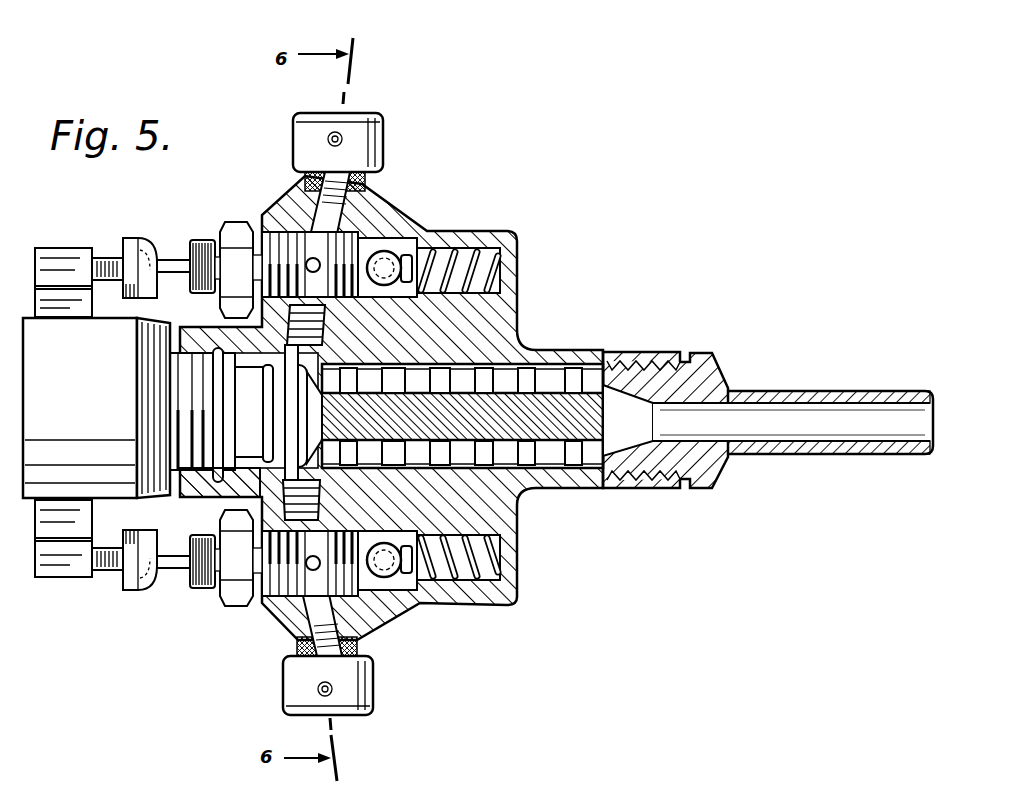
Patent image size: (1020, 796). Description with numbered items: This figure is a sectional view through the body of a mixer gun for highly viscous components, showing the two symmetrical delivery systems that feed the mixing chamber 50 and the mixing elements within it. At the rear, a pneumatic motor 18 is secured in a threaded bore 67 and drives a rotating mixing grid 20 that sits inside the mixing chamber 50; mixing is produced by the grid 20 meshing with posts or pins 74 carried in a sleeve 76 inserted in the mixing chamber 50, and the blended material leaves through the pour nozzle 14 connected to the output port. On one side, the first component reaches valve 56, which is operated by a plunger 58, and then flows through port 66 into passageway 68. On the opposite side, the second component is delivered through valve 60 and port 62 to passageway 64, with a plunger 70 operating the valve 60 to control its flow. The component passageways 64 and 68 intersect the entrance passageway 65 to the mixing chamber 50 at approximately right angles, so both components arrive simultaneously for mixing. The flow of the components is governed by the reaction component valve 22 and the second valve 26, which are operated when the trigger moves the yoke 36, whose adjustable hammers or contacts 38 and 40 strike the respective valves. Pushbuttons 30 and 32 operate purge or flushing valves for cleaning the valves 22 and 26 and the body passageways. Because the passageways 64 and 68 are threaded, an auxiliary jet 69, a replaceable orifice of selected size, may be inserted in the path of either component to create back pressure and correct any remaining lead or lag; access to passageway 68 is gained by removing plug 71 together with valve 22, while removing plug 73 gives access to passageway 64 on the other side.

The pour nozzle 14 is at (828, 391).
The pneumatic motor 18 is at (89, 388).
The mixing grid 20 is at (590, 470).
The reaction component valve 22 is at (235, 608).
The second valve 26 is at (240, 222).
The pushbutton 30 is at (355, 687).
The pushbutton 32 is at (380, 114).
The yoke 36 is at (70, 575).
The adjustable hammer or contact 38 is at (145, 590).
The adjustable hammer or contact 40 is at (148, 240).
The mixing chamber 50 is at (538, 462).
The valve 56 is at (400, 608).
The plunger 58 is at (170, 570).
The valve 60 is at (340, 244).
The port 62 is at (311, 258).
The passageway 64 is at (352, 256).
The entrance passageway 65 is at (300, 345).
The port 66 is at (298, 633).
The threaded bore 67 is at (197, 500).
The passageway 68 is at (295, 615).
The auxiliary jet 69 is at (305, 495).
The plunger 70 is at (172, 262).
The plug 71 is at (355, 646).
The plug 73 is at (381, 168).
The posts or pins 74 is at (572, 367).
The sleeve 76 is at (513, 362).